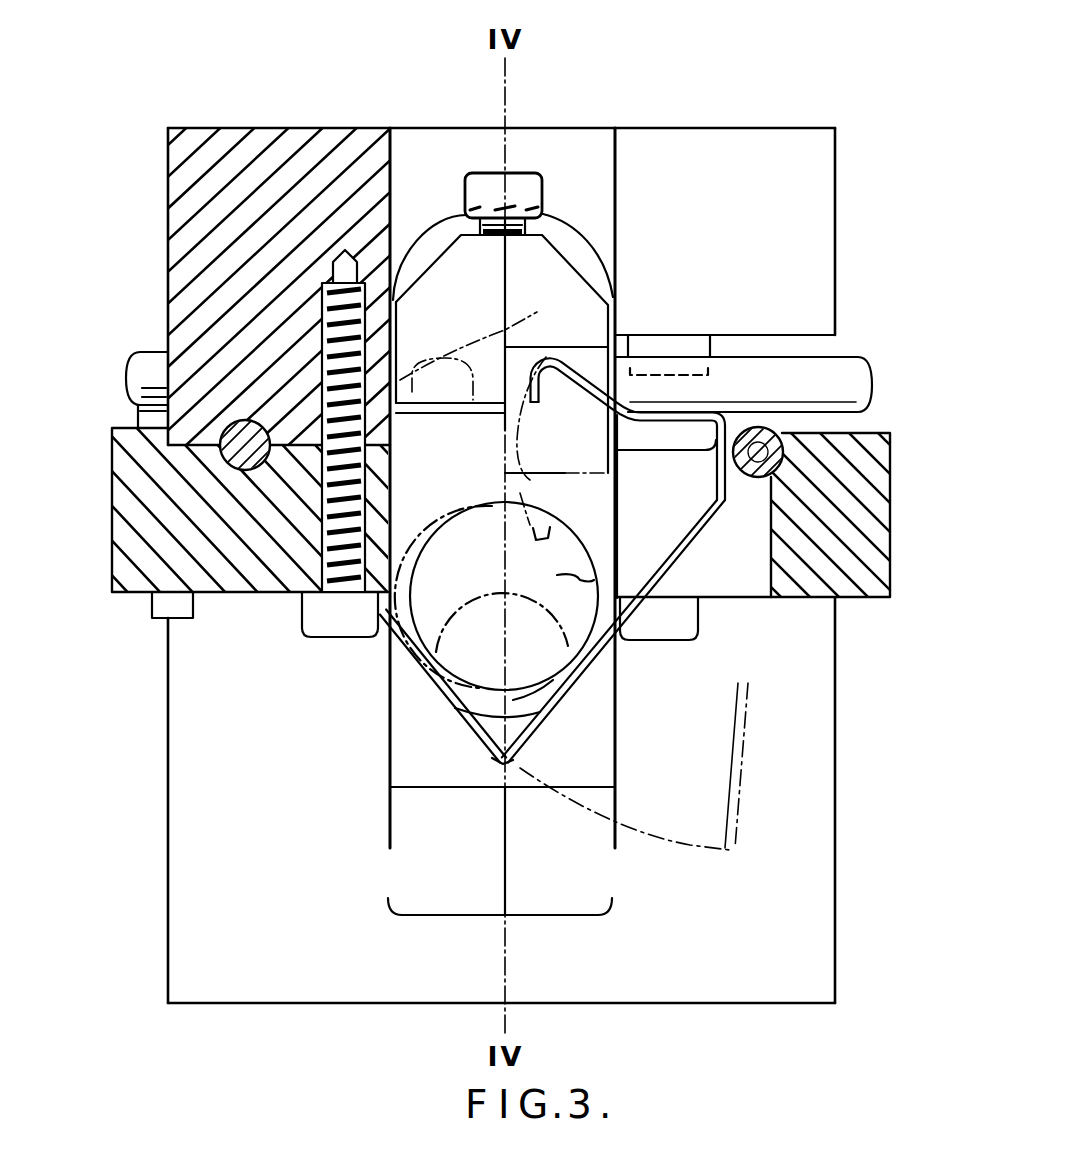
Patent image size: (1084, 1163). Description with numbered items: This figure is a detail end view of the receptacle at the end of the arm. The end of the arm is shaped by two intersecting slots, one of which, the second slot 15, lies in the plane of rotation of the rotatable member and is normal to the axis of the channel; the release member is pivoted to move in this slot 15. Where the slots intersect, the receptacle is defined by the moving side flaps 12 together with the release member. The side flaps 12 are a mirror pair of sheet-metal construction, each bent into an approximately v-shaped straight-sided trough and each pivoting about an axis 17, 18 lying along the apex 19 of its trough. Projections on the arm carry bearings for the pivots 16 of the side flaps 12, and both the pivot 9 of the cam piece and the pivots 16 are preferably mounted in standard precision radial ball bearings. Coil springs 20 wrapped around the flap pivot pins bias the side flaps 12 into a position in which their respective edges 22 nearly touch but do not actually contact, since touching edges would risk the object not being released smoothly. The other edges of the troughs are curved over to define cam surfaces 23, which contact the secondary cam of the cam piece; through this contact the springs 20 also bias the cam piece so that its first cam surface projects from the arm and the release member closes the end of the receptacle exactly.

The pivot 9 is at (762, 392).
The side flaps 12 is at (457, 708).
The second slot 15 is at (500, 926).
The pivots 16 is at (217, 452).
The axis 17 is at (277, 507).
The axis 18 is at (748, 481).
The apex 19 is at (713, 472).
The coil springs 20 is at (230, 473).
The edges 22 is at (483, 760).
The cam surfaces 23 is at (543, 350).